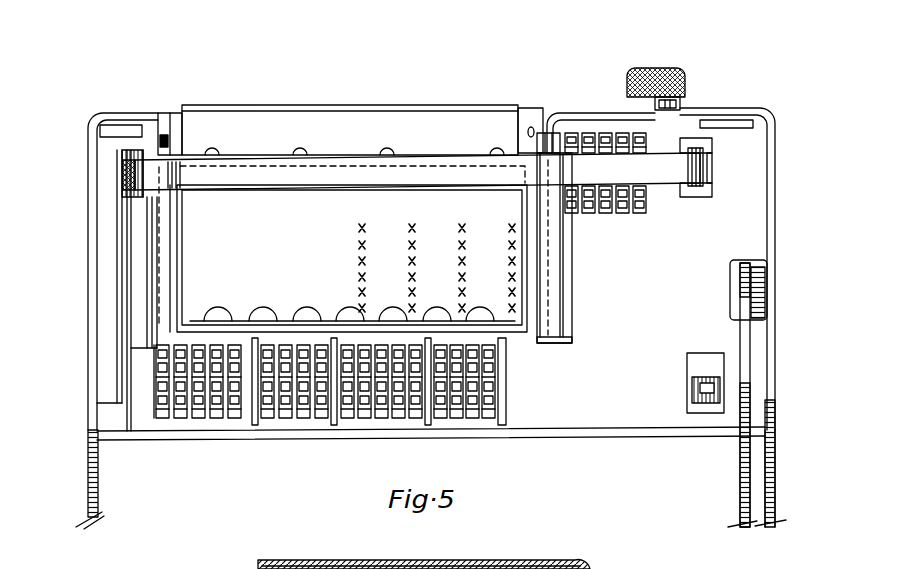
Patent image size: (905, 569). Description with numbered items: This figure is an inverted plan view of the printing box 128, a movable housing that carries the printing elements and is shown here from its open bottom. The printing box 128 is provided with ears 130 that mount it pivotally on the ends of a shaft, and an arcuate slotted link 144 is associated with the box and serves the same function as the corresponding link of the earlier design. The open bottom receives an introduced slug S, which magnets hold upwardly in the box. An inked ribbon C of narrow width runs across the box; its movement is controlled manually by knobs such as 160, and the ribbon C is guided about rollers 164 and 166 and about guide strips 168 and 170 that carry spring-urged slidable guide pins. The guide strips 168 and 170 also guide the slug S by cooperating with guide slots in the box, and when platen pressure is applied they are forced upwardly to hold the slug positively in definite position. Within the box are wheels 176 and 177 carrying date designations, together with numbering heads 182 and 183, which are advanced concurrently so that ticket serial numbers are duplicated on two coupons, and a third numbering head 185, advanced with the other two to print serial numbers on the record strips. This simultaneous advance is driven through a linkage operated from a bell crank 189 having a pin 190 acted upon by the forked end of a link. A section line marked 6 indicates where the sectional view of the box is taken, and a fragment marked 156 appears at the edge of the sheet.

The section line 6- 6 is at (668, 190).
The inked ribbon C is at (663, 163).
The slug S is at (518, 107).
The printing box 128 is at (577, 438).
The ears 130 is at (100, 497).
The arcuate slotted link 144 is at (740, 498).
The cover 156 is at (402, 556).
The knob 160 is at (685, 70).
The roller 164 is at (702, 192).
The roller 166 is at (142, 193).
The guide strip 168 is at (553, 283).
The guide strip 170 is at (163, 278).
The date wheel 176 is at (358, 420).
The date wheel 177 is at (175, 420).
The numbering head 182 is at (270, 420).
The numbering head 183 is at (440, 420).
The third numbering head 185 is at (580, 213).
The bell crank 189 is at (687, 365).
The pin 190 is at (708, 403).